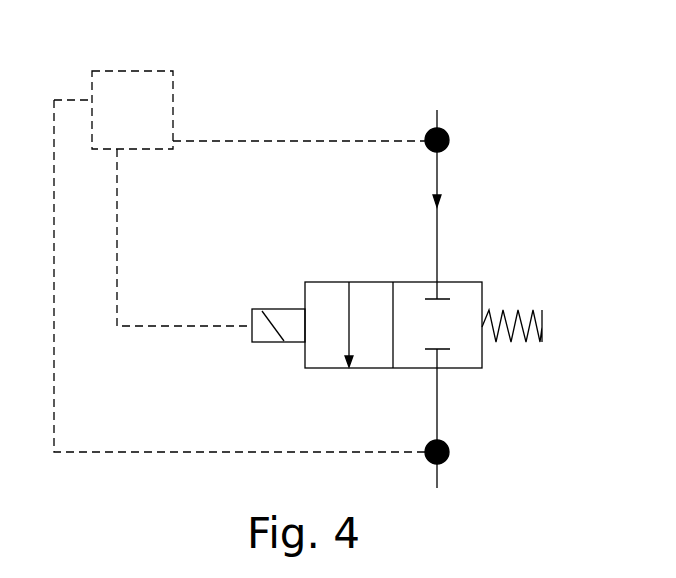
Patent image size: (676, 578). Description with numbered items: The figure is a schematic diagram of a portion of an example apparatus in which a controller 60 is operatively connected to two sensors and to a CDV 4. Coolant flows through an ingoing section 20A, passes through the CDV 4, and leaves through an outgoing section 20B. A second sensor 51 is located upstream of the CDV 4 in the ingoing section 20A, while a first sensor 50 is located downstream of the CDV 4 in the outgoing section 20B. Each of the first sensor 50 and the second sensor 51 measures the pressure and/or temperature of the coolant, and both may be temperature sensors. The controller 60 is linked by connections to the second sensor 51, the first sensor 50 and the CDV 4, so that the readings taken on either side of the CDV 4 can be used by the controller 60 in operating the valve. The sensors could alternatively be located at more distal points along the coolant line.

The controller 60 is at (135, 92).
The second sensor 51 is at (448, 140).
The ingoing section 20A is at (437, 188).
The CDV 4 is at (482, 300).
The outgoing section 20B is at (437, 415).
The first sensor 50 is at (448, 452).